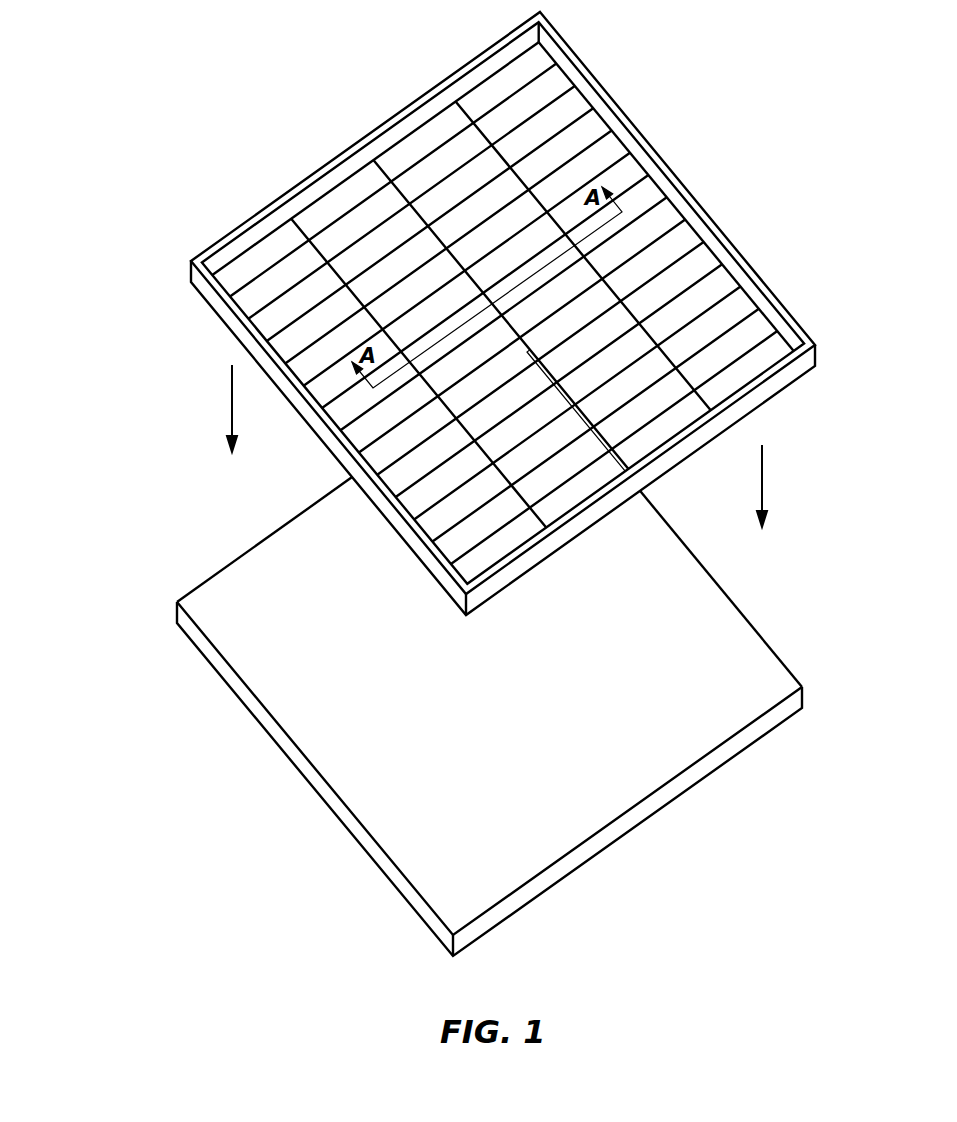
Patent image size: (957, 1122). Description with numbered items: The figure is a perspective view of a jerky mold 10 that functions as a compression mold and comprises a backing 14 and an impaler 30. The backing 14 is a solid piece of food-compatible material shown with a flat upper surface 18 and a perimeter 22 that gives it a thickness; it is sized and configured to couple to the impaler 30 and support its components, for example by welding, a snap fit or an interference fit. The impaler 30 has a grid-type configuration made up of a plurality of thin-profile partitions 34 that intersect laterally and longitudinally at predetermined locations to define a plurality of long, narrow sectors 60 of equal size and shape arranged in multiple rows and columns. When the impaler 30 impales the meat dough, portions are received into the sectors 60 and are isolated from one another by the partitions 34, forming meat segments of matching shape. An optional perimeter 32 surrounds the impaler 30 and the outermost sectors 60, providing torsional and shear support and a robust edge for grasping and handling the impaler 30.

The jerky mold 10 is at (168, 393).
The backing 14 is at (340, 715).
The upper surface 18 is at (722, 648).
The perimeter 22 is at (245, 548).
The impaler 30 is at (640, 128).
The perimeter 32 is at (748, 262).
The partitions 34 is at (343, 213).
The sectors 60 is at (448, 155).